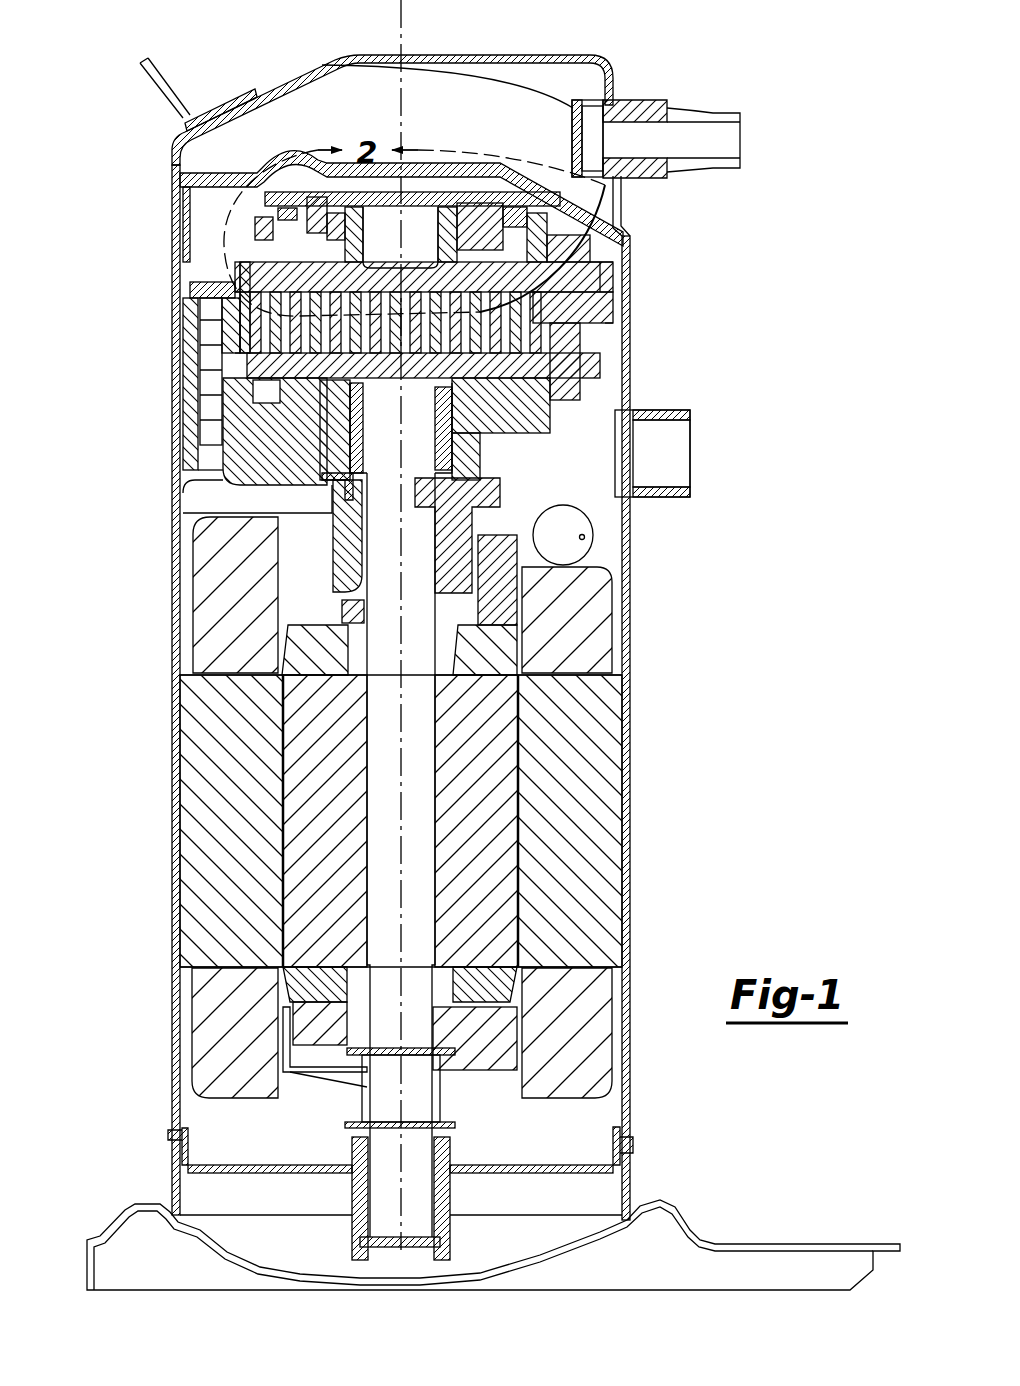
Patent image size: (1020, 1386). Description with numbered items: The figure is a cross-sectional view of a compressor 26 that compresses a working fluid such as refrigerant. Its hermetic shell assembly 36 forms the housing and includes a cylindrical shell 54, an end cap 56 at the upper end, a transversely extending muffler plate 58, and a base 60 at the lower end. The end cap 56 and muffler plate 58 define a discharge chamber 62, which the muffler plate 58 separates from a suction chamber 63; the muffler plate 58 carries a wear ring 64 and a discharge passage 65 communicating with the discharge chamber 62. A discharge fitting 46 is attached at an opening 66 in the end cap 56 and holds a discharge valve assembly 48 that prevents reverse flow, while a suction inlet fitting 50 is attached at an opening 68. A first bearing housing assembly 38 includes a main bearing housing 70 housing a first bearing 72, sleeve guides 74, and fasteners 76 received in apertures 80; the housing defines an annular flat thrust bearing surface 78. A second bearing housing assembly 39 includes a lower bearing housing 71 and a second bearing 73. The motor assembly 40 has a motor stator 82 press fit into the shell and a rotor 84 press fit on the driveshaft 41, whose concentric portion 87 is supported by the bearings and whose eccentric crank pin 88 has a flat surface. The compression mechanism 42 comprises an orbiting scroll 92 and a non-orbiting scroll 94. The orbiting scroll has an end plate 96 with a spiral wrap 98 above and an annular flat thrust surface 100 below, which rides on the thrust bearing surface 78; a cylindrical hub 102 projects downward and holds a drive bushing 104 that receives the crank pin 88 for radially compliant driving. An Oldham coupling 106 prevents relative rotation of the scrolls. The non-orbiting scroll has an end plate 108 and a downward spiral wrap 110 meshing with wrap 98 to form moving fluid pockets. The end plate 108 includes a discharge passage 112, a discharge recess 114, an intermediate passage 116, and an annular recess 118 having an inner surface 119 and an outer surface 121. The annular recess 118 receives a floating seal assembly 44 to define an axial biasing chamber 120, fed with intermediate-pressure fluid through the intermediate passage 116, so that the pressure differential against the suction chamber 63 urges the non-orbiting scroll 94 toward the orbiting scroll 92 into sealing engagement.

The compressor 26 is at (758, 34).
The hermetic shell assembly 36 is at (135, 610).
The first bearing housing assembly 38 is at (223, 490).
The second bearing housing assembly 39 is at (352, 1190).
The motor assembly 40 is at (632, 748).
The driveshaft 41 is at (425, 805).
The compression mechanism 42 is at (612, 305).
The floating seal assembly 44 is at (276, 210).
The discharge fitting 46 is at (683, 107).
The discharge valve assembly 48 is at (590, 150).
The suction inlet fitting 50 is at (683, 495).
The cylindrical shell 54 is at (630, 645).
The end cap 56 is at (568, 60).
The muffler plate 58 is at (225, 168).
The base 60 is at (233, 1255).
The discharge chamber 62 is at (362, 82).
The suction chamber 63 is at (585, 485).
The wear ring 64 is at (470, 200).
The discharge passage 65 is at (432, 195).
The opening 66 is at (625, 112).
The opening 68 is at (630, 460).
The main bearing housing 70 is at (490, 470).
The lower bearing housing 71 is at (580, 1172).
The first bearing 72 is at (360, 555).
The second bearing 73 is at (445, 1205).
The sleeve guides 74 is at (185, 362).
The fasteners 76 is at (205, 290).
The annular flat thrust bearing surface 78 is at (520, 358).
The apertures 80 is at (200, 405).
The motor stator 82 is at (190, 885).
The rotor 84 is at (502, 890).
The concentric portion 87 is at (380, 760).
The eccentric crank pin 88 is at (450, 430).
The orbiting scroll 92 is at (242, 372).
The non-orbiting scroll 94 is at (592, 273).
The end plate 96 is at (268, 410).
The spiral wrap 98 is at (490, 322).
The annular flat thrust surface 100 is at (305, 400).
The cylindrical hub 102 is at (445, 490).
The drive bushing 104 is at (340, 490).
The Oldham coupling 106 is at (585, 362).
The end plate 108 is at (593, 258).
The spiral wrap 110 is at (320, 340).
The discharge passage 112 is at (400, 283).
The discharge recess 114 is at (425, 228).
The intermediate passage 116 is at (340, 318).
The annular recess 118 is at (577, 253).
The inner surface 119 is at (323, 276).
The axial biasing chamber 120 is at (523, 253).
The outer surface 121 is at (303, 225).